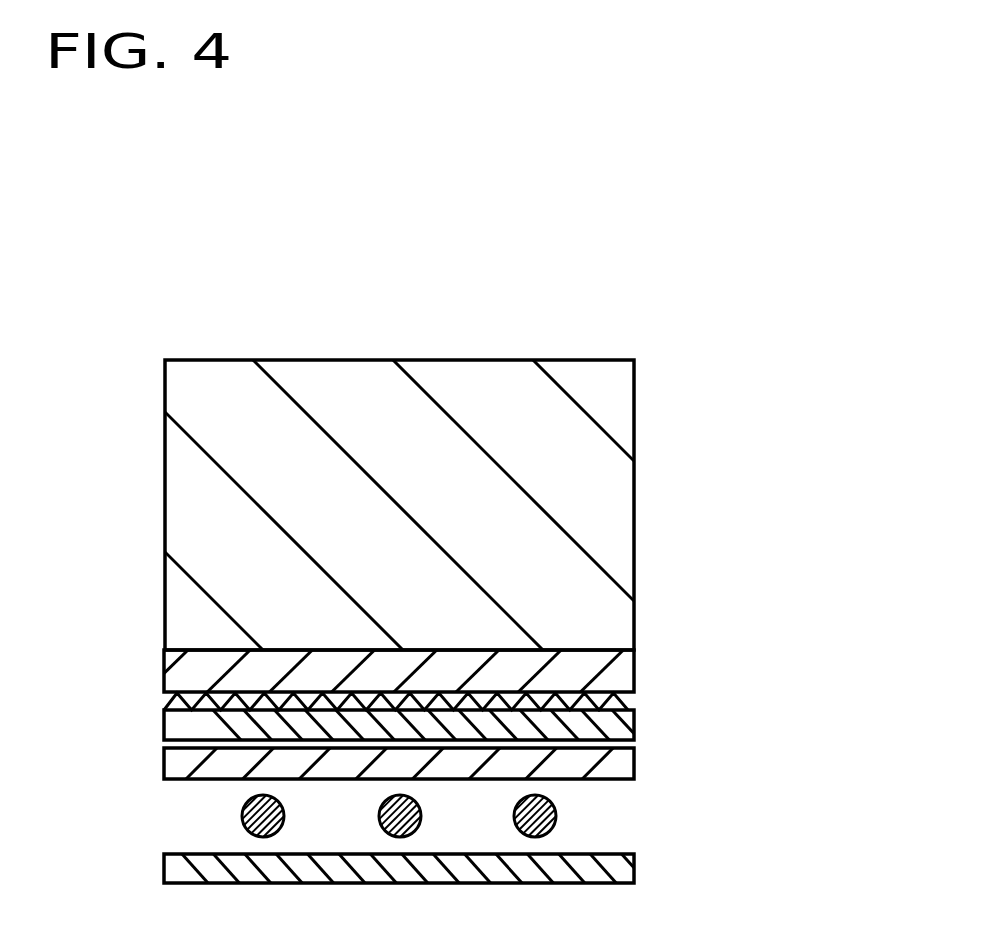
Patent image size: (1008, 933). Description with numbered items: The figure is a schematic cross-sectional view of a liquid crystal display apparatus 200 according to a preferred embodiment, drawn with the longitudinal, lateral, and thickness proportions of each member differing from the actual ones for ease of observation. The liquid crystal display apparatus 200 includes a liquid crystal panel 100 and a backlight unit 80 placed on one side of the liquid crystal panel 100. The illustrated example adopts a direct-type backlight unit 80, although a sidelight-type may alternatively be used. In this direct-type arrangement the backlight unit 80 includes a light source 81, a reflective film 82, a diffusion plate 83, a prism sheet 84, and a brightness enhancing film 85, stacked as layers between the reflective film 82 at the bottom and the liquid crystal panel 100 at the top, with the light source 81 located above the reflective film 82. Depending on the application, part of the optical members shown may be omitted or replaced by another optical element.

The liquid crystal display apparatus 200 is at (712, 273).
The liquid crystal panel 100 is at (593, 540).
The backlight unit 80 is at (400, 770).
The brightness enhancing film 85 is at (193, 672).
The prism sheet 84 is at (193, 722).
The diffusion plate 83 is at (195, 765).
The light source 81 is at (250, 813).
The reflective film 82 is at (203, 870).